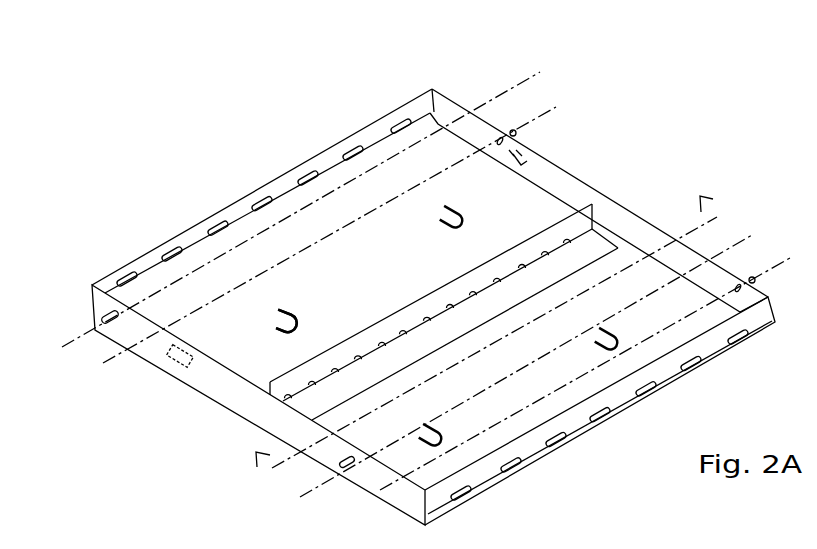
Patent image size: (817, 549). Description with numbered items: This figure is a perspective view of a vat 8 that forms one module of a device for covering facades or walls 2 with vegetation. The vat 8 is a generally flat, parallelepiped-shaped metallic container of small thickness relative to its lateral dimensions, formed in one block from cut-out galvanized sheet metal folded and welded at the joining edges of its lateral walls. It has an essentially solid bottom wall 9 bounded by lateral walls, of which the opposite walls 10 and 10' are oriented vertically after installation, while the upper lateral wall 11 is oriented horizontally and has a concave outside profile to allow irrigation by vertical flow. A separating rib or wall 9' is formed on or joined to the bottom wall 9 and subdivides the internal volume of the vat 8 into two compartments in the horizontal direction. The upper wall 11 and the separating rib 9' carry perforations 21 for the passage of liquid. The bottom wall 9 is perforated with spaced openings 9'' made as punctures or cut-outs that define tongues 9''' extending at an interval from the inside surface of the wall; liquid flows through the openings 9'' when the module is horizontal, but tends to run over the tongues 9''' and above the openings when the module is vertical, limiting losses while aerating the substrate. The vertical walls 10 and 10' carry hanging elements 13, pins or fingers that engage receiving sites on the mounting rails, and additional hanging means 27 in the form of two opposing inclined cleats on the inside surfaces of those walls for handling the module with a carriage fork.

The facade or wall 2 is at (557, 441).
The vat 8 is at (196, 467).
The bottom wall 9 is at (518, 256).
The separating rib or wall 9' is at (444, 253).
The openings 9'' is at (179, 388).
The tongues 9''' is at (194, 374).
The lateral wall 10 is at (258, 405).
The lateral wall 10' is at (599, 200).
The upper lateral wall 11 is at (190, 240).
The hanging elements 13 is at (515, 133).
The perforations 21 is at (263, 205).
The additional hanging means 27 is at (521, 150).